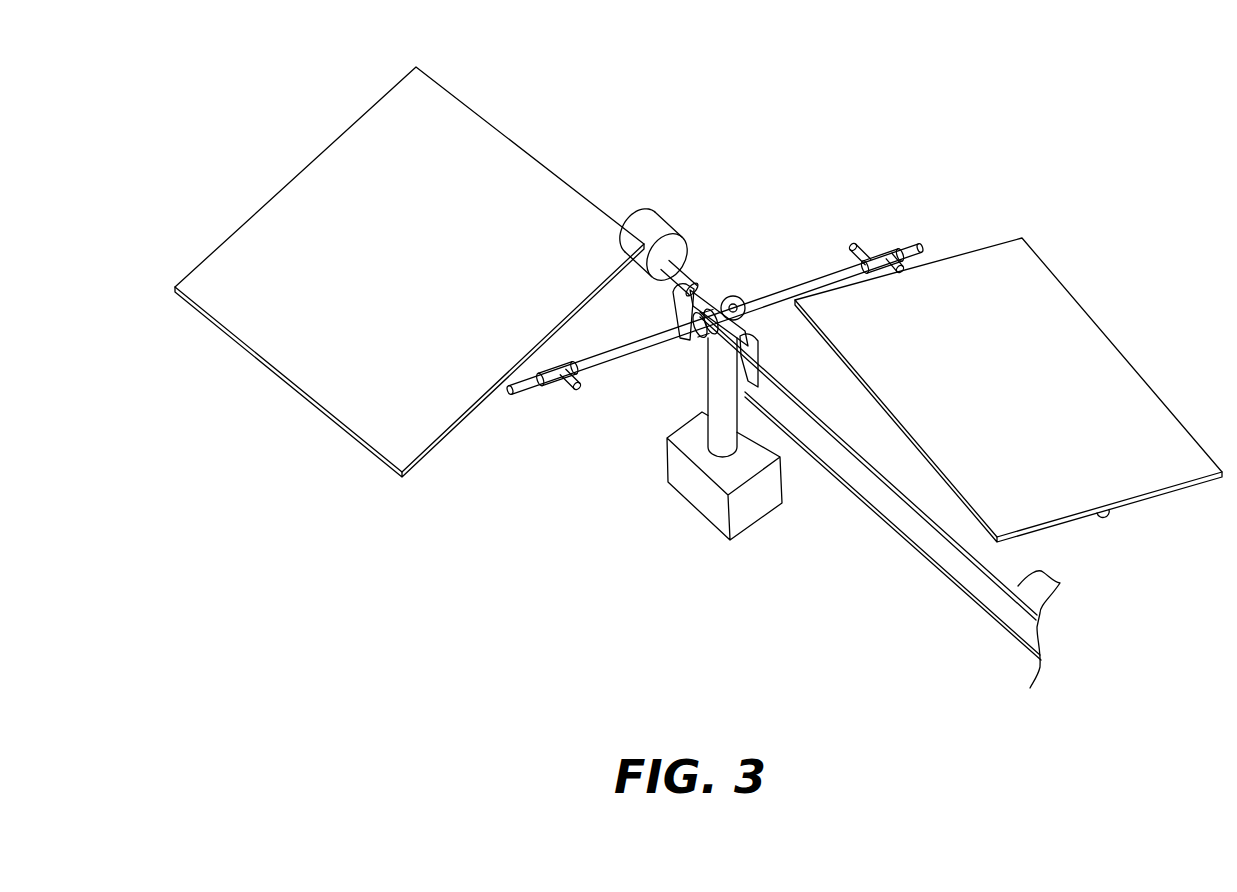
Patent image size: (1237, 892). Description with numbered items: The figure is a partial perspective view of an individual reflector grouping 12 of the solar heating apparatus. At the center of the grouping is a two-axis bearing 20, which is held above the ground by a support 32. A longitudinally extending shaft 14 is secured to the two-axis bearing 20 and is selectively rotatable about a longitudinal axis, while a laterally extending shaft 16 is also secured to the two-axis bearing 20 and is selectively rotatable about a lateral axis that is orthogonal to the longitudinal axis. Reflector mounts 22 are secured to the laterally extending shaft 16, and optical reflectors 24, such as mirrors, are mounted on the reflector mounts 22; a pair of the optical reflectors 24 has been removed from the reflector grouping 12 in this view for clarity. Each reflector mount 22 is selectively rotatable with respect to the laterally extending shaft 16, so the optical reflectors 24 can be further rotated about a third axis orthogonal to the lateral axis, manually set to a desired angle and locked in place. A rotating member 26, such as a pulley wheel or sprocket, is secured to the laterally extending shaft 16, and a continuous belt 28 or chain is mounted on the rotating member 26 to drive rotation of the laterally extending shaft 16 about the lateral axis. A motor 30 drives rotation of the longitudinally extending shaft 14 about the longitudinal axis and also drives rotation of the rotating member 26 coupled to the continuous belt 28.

The reflector grouping 12 is at (1176, 224).
The longitudinally extending shaft 14 is at (1060, 583).
The laterally extending shaft 16 is at (813, 270).
The two-axis bearing 20 is at (706, 292).
The reflector mount 22 is at (527, 364).
The optical reflector 24 is at (284, 345).
The rotating member 26 is at (698, 341).
The continuous belt 28 is at (975, 599).
The motor 30 is at (663, 215).
The support 32 is at (753, 505).